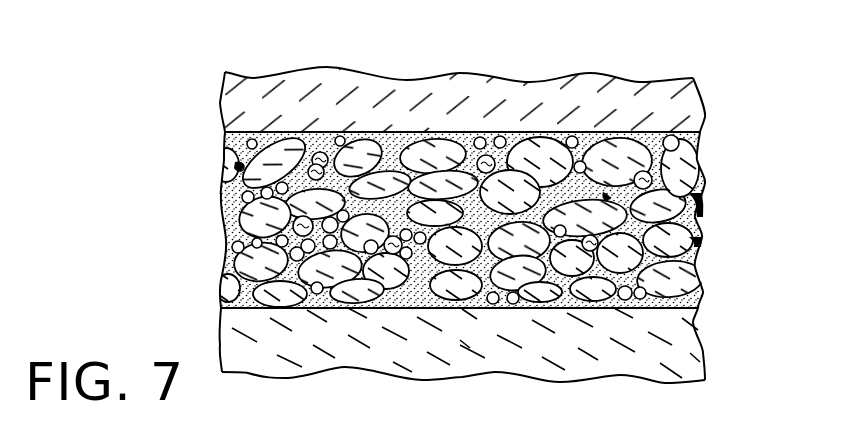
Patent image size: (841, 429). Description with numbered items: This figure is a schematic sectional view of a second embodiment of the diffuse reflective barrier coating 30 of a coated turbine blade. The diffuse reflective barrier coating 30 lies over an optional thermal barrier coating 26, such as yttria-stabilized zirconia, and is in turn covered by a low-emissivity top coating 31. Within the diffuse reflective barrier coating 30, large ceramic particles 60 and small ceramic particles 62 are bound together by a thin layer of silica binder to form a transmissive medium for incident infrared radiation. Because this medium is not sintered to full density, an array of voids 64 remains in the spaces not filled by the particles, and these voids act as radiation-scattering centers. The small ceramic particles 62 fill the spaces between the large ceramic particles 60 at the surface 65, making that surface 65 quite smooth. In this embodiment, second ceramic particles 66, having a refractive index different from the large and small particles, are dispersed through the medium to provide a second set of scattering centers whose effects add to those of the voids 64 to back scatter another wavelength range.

The thermal barrier coating 26 is at (221, 343).
The diffuse reflective barrier coating 30 is at (240, 183).
The low-emissivity top coating 31 is at (684, 101).
The large ceramic particles 60 is at (682, 178).
The small ceramic particles 62 is at (660, 143).
The voids 64 is at (703, 237).
The surface 65 is at (245, 133).
The second ceramic particles 66 is at (627, 278).